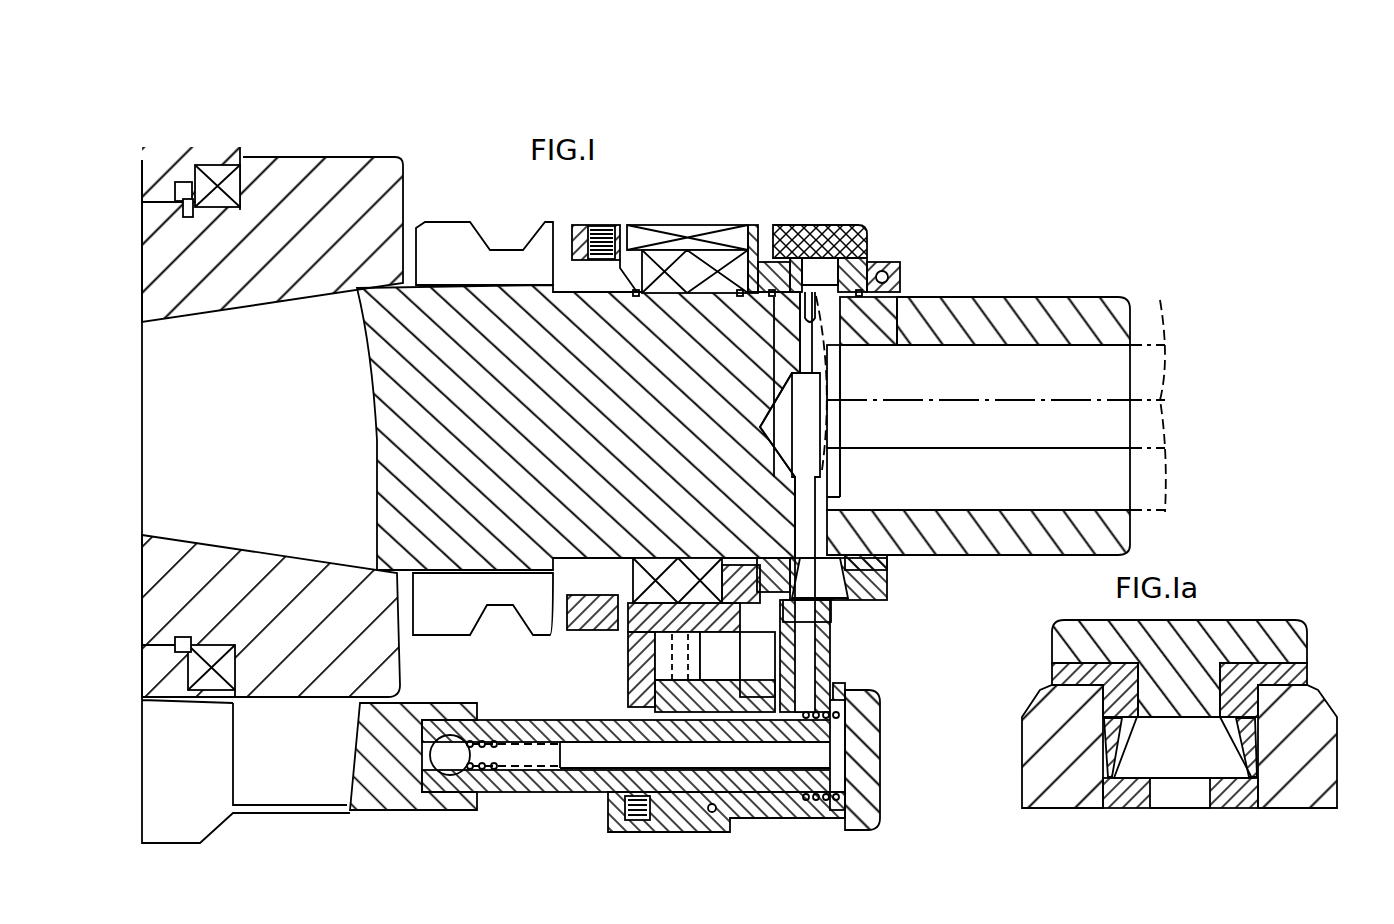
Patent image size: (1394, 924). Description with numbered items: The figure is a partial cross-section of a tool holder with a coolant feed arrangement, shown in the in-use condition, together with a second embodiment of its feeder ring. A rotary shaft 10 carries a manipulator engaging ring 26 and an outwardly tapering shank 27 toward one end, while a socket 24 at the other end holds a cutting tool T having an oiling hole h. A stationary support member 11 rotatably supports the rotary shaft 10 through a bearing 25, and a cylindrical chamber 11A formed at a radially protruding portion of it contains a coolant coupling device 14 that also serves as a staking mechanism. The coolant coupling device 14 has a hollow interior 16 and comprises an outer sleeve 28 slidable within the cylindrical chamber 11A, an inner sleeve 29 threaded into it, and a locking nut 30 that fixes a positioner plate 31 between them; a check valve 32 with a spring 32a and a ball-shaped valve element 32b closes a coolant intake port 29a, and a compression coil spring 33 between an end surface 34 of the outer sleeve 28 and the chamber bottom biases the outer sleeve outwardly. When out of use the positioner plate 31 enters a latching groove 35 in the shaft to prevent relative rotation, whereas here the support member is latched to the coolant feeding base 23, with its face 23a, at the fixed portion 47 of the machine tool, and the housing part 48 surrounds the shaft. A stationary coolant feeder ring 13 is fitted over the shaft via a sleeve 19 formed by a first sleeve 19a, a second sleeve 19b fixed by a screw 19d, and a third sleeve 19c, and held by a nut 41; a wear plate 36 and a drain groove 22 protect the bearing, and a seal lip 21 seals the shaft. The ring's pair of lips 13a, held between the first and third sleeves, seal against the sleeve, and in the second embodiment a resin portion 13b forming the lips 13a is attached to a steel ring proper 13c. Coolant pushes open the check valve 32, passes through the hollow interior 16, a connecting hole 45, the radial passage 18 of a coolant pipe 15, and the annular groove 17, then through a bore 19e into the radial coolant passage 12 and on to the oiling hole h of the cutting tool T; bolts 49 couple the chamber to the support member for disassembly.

In FIG. 1, the rotary shaft 10 is at (523, 300).
In FIG. 1, the stationary support member 11 is at (714, 230).
In FIG. 1, the cylindrical chamber 11A is at (860, 776).
In FIG. 1, the radial coolant passage 12 is at (780, 391).
In FIG. 1, the stationary coolant feeder ring 13 is at (858, 609).
In FIG. 1a, the stationary coolant feeder ring 13 is at (1295, 626).
In FIG. 1, the lips 13a is at (850, 243).
In FIG. 1a, the lips 13a is at (1123, 741).
In FIG. 1a, the lip-forming portion 13b is at (1268, 663).
In FIG. 1a, the ring proper 13c is at (1225, 632).
In FIG. 1, the coolant coupling device 14 is at (712, 833).
In FIG. 1, the coolant pipe 15 is at (830, 641).
In FIG. 1, the hollow interior 16 is at (557, 719).
In FIG. 1, the annular groove 17 is at (867, 241).
In FIG. 1, the radial passage 18 is at (833, 661).
In FIG. 1, the sleeve 19 is at (950, 152).
In FIG. 1a, the sleeve 19 is at (1292, 848).
In FIG. 1, the first sleeve 19a is at (827, 228).
In FIG. 1a, the first sleeve 19a is at (1070, 778).
In FIG. 1, the second sleeve 19b is at (900, 262).
In FIG. 1a, the second sleeve 19b is at (1133, 798).
In FIG. 1, the third sleeve 19c is at (895, 290).
In FIG. 1a, the third sleeve 19c is at (1290, 784).
In FIG. 1, the screw 19d is at (825, 415).
In FIG. 1, the bore 19e is at (845, 524).
In FIG. 1, the seal lip 21 is at (800, 345).
In FIG. 1, the drain groove 22 is at (766, 252).
In FIG. 1, the coolant feeding base 23 is at (425, 811).
In FIG. 1, the end block face 23a is at (373, 808).
In FIG. 1, the socket 24 is at (1005, 318).
In FIG. 1, the bearing 25 is at (645, 255).
In FIG. 1, the manipulator engaging ring 26 is at (497, 235).
In FIG. 1, the shank 27 is at (338, 322).
In FIG. 1, the outer sleeve 28 is at (683, 828).
In FIG. 1, the inner sleeve 29 is at (549, 793).
In FIG. 1, the coolant intake port 29a is at (427, 750).
In FIG. 1, the locking nut 30 is at (613, 833).
In FIG. 1, the positioner plate 31 is at (627, 664).
In FIG. 1, the check valve 32 is at (585, 851).
In FIG. 1, the spring 32a is at (540, 817).
In FIG. 1, the ball-shaped valve element 32b is at (480, 794).
In FIG. 1, the compression coil spring 33 is at (843, 824).
In FIG. 1, the end surface 34 is at (818, 824).
In FIG. 1, the latching groove 35 is at (580, 607).
In FIG. 1, the wear plate 36 is at (753, 240).
In FIG. 1, the nut 41 is at (888, 315).
In FIG. 1, the connecting hole 45 is at (840, 685).
In FIG. 1, the fixed portion 47 is at (183, 807).
In FIG. 1, the housing 48 is at (383, 672).
In FIG. 1, the bolts 49 is at (697, 661).
In FIG. 1, the cutting tool T is at (1001, 402).
In FIG. 1, the oiling hole h is at (1145, 412).